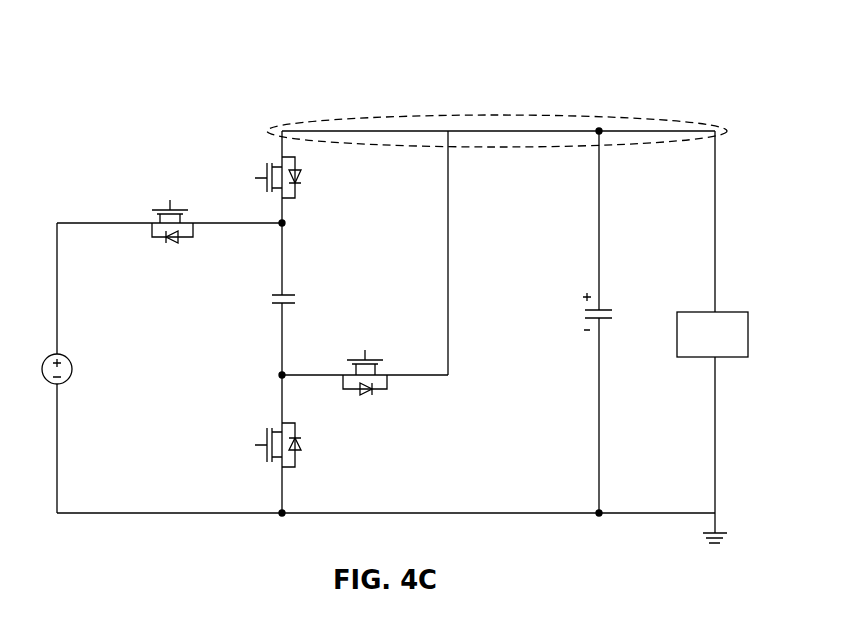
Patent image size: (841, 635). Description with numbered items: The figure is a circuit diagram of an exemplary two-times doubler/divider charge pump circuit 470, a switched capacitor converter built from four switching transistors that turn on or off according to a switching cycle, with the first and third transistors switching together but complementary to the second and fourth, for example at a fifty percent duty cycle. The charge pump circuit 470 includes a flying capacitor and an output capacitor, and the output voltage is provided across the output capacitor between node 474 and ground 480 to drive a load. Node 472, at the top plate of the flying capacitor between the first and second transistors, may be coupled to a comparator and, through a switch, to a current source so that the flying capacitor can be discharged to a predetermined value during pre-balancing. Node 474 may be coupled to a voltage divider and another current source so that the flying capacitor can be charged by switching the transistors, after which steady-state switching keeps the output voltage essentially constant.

The charge pump circuit 470 is at (685, 85).
The node 472 is at (285, 226).
The node 474 is at (412, 116).
The ground 480 is at (716, 547).